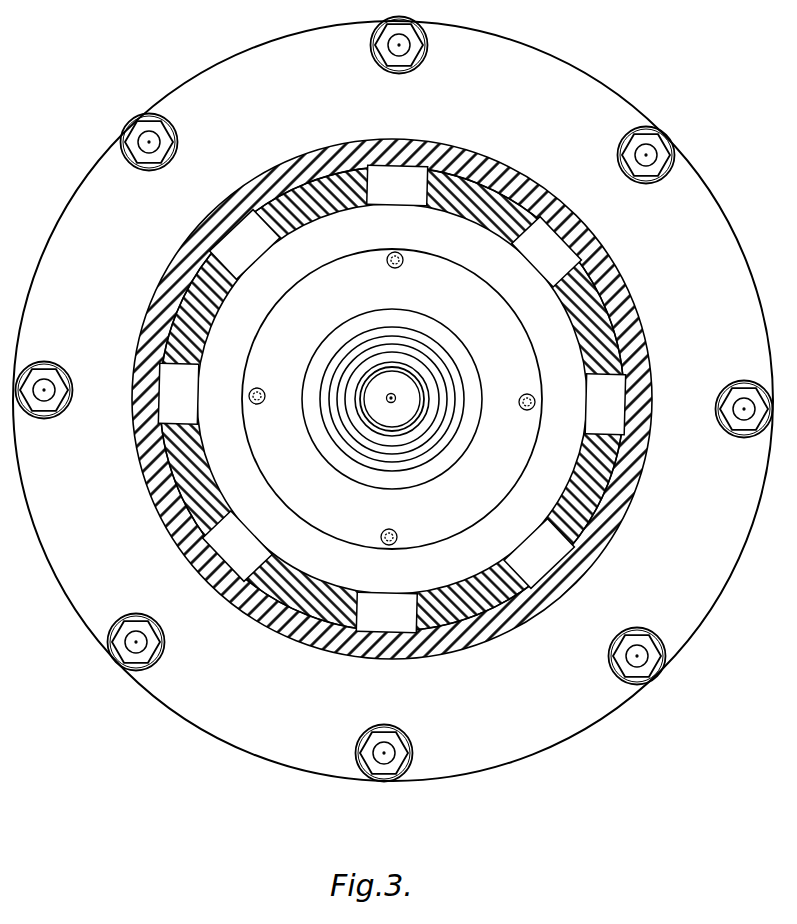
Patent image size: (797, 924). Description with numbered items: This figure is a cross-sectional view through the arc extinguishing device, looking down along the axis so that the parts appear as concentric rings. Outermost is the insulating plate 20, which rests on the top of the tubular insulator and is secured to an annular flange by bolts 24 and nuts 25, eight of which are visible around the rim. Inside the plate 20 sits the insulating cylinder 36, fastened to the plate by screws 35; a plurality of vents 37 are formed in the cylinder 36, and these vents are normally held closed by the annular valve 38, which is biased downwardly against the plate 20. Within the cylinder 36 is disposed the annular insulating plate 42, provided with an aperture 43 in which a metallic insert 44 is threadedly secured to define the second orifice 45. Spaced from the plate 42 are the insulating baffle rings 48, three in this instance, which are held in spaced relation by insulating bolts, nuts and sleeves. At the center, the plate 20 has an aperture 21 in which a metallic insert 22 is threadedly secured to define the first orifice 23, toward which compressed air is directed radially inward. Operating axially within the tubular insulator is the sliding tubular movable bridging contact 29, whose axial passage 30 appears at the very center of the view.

The insulating plate 20 is at (550, 738).
The aperture 21 is at (447, 406).
The metallic insert 22 is at (427, 383).
The first orifice 23 is at (415, 376).
The bolt 24 is at (147, 137).
The nut 25 is at (130, 132).
The bridging contact 29 is at (395, 380).
The axial passage 30 is at (393, 402).
The screw 35 is at (192, 477).
The insulating cylinder 36 is at (583, 473).
The vent 37 is at (277, 232).
The annular valve 38 is at (637, 476).
The annular insulating plate 42 is at (573, 401).
The aperture 43 is at (455, 437).
The metallic insert 44 is at (450, 420).
The second orifice 45 is at (438, 397).
The insulating baffle ring 48 is at (512, 331).